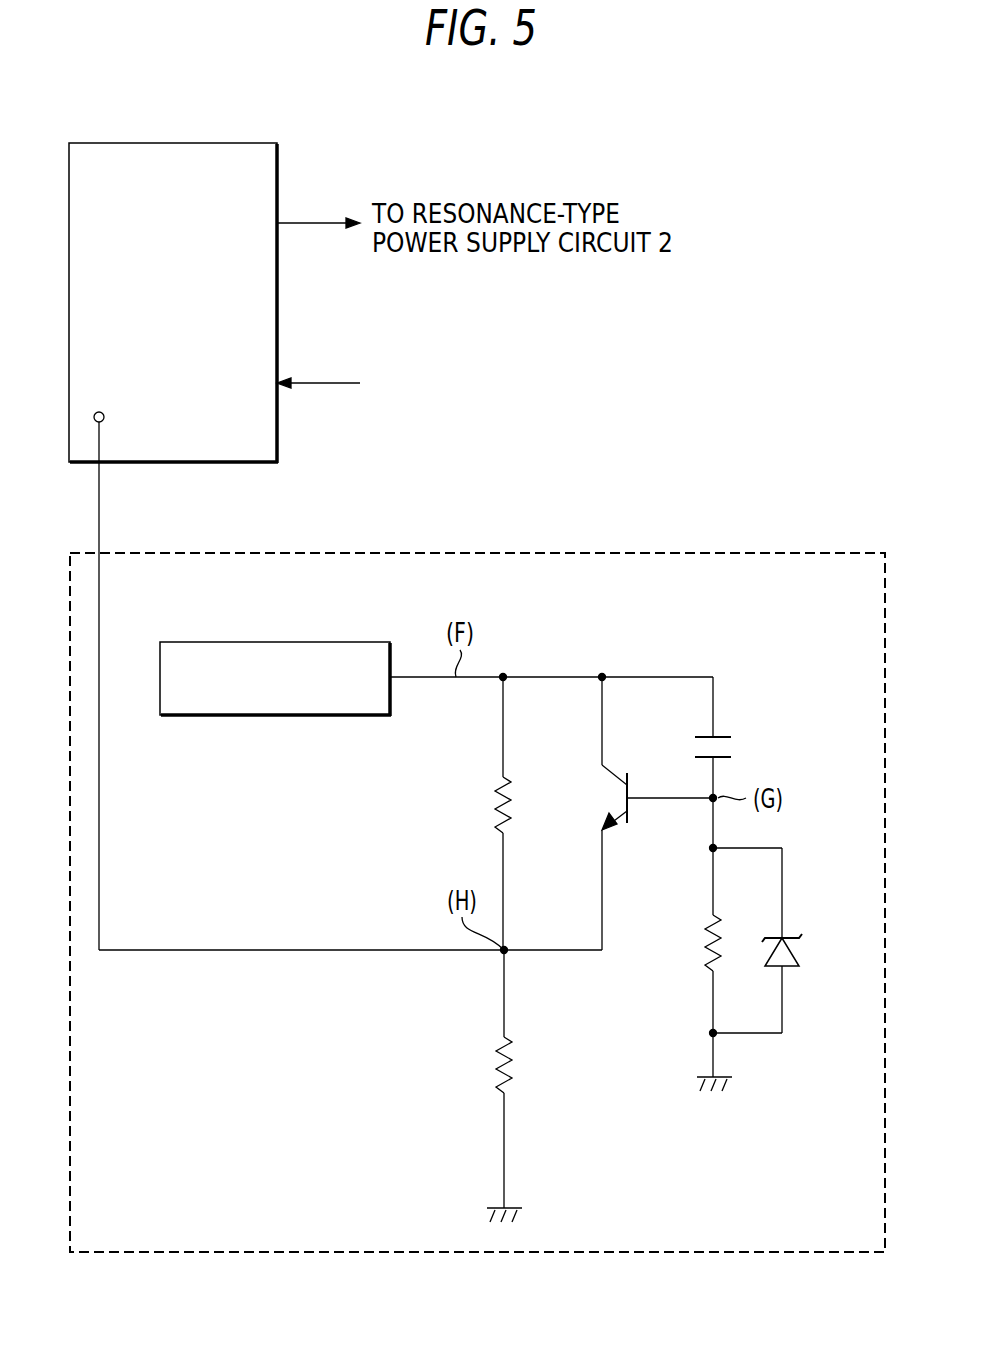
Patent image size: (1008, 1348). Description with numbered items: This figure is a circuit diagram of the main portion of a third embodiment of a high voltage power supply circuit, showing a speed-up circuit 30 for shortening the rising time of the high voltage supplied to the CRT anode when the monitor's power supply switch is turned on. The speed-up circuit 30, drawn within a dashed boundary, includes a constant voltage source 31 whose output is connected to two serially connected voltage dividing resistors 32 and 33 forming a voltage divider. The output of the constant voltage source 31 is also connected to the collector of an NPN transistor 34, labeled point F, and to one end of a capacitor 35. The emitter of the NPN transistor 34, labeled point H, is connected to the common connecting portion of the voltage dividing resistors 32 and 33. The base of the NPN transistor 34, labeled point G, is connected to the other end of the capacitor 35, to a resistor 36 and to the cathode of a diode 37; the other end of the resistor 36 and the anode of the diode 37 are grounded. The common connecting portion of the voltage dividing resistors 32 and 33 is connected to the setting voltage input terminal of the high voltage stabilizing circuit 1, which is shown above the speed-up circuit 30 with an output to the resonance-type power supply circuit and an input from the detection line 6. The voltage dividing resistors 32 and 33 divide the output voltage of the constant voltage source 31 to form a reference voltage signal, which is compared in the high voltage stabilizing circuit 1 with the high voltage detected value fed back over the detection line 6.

The high voltage stabilizing circuit 1 is at (170, 143).
The detection line 6 is at (340, 383).
The speed-up circuit 30 is at (600, 553).
The constant voltage source 31 is at (272, 642).
The voltage dividing resistor 32 is at (495, 805).
The voltage dividing resistor 33 is at (496, 1068).
The NPN transistor 34 is at (641, 788).
The capacitor 35 is at (735, 747).
The resistor 36 is at (706, 945).
The diode 37 is at (800, 947).